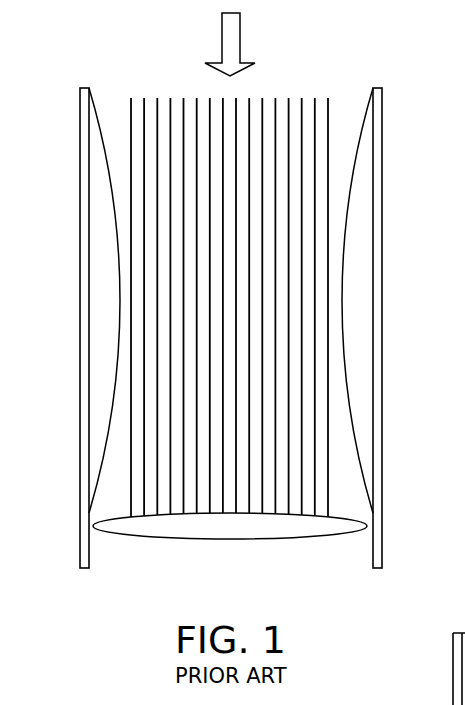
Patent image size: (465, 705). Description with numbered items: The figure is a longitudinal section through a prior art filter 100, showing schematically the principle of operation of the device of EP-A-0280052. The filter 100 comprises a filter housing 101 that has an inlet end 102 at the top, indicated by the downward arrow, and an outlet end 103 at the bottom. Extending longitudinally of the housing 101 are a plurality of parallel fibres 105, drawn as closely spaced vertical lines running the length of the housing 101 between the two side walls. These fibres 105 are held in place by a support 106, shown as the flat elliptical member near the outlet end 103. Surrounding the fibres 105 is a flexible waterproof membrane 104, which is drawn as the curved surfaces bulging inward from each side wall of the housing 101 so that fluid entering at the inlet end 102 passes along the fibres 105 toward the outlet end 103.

The filter 100 is at (300, 76).
The filter housing 101 is at (80, 157).
The inlet end 102 is at (176, 75).
The outlet end 103 is at (303, 559).
The flexible waterproof membrane 104 is at (120, 312).
The light rays 105 is at (290, 203).
The support 106 is at (233, 533).